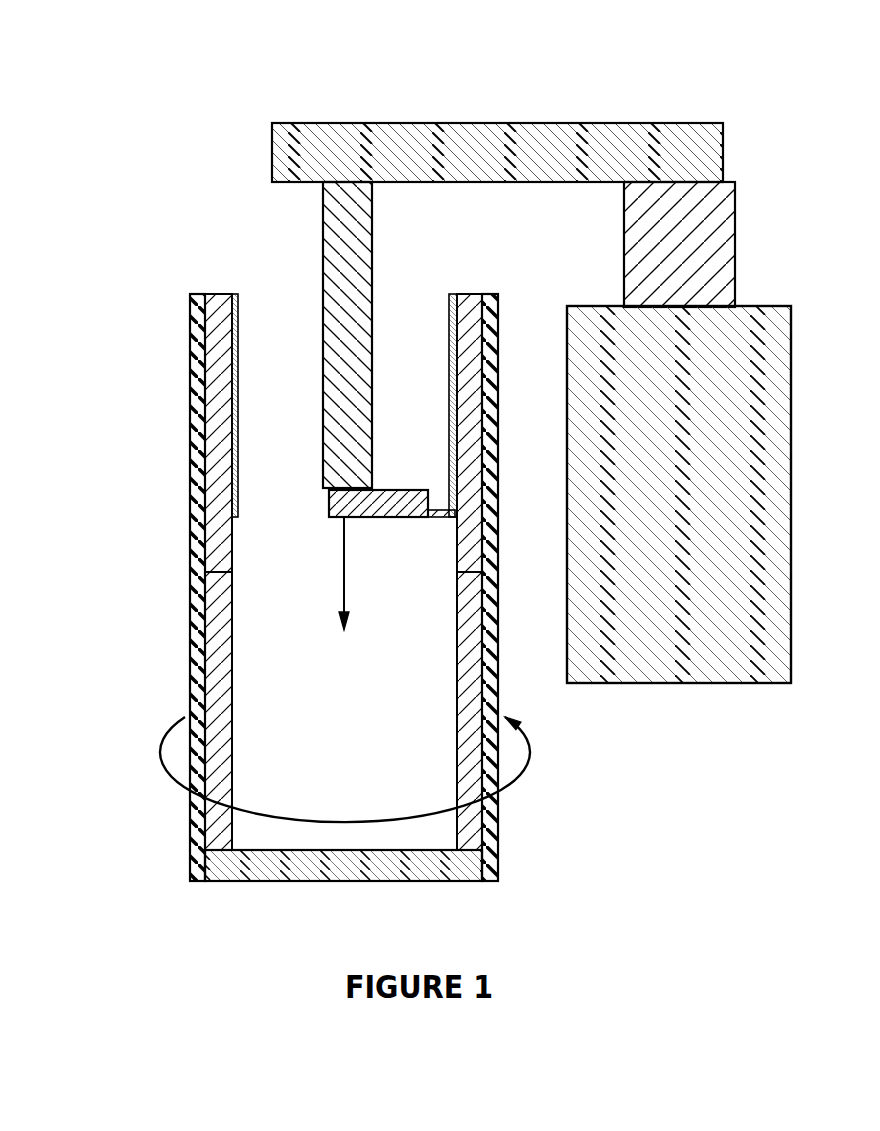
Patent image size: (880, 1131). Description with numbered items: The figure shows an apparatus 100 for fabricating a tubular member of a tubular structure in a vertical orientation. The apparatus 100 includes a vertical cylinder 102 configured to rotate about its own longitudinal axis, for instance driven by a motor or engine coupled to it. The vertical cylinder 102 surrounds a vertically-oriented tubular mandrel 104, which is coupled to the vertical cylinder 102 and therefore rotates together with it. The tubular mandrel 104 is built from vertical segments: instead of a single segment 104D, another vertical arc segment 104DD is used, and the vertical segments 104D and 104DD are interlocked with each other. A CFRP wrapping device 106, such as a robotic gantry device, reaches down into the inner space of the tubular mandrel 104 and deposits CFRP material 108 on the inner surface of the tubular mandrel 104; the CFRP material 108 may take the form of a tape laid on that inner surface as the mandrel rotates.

The apparatus 100 is at (165, 93).
The vertical cylinder 102 is at (203, 452).
The tubular mandrel 104 is at (222, 548).
The vertical segment 104D is at (483, 537).
The vertical arc segment 104DD is at (465, 690).
The CFRP wrapping device 106 is at (388, 500).
The CFRP material 108 is at (236, 338).